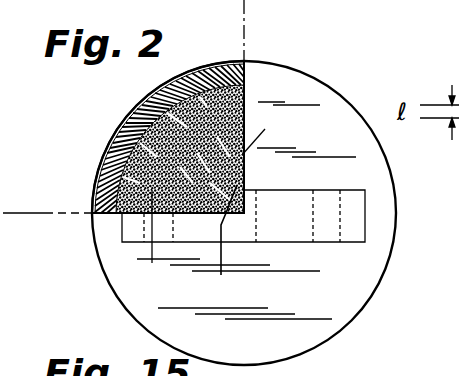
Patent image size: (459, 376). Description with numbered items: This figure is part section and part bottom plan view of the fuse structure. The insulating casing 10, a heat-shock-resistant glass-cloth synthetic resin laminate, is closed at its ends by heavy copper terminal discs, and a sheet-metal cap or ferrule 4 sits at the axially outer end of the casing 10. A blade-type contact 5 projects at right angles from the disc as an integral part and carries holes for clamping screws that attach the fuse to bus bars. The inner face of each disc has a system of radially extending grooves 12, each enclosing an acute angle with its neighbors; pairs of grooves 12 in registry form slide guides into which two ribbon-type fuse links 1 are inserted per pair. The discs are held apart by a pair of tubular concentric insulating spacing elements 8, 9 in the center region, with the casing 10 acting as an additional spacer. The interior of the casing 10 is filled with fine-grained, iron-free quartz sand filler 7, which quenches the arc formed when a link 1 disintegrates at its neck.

The fuse link 1 is at (242, 123).
The cap 4 is at (395, 206).
The blade-type contact 5 is at (284, 242).
The arc-quenching quartz sand filler 7 is at (102, 163).
The tubular spacing element 8 is at (244, 190).
The tubular spacing element 9 is at (224, 240).
The casing 10 is at (121, 127).
The radially extending groove 12 is at (197, 68).